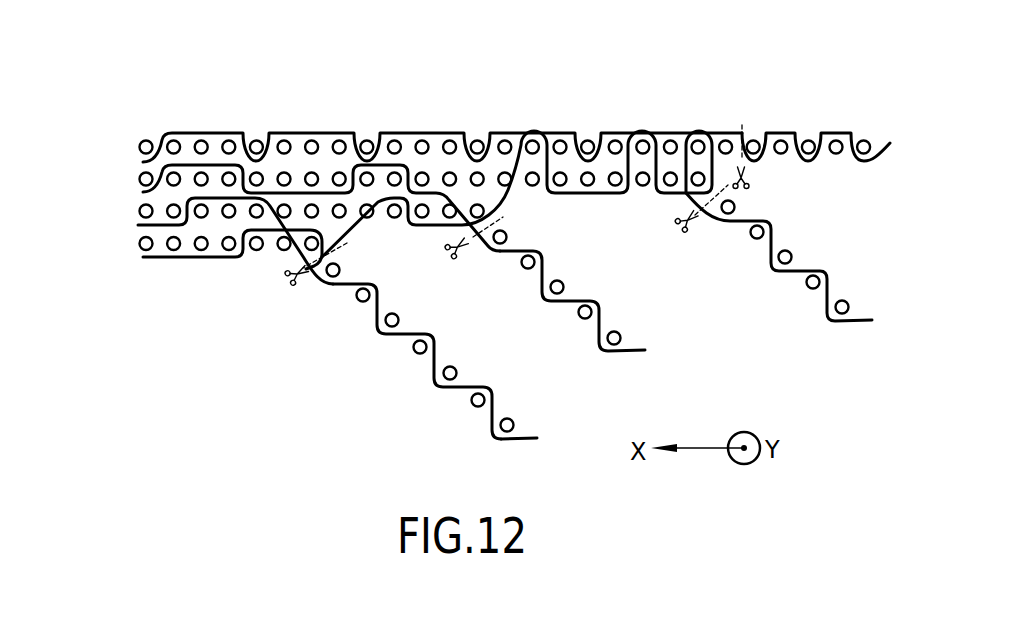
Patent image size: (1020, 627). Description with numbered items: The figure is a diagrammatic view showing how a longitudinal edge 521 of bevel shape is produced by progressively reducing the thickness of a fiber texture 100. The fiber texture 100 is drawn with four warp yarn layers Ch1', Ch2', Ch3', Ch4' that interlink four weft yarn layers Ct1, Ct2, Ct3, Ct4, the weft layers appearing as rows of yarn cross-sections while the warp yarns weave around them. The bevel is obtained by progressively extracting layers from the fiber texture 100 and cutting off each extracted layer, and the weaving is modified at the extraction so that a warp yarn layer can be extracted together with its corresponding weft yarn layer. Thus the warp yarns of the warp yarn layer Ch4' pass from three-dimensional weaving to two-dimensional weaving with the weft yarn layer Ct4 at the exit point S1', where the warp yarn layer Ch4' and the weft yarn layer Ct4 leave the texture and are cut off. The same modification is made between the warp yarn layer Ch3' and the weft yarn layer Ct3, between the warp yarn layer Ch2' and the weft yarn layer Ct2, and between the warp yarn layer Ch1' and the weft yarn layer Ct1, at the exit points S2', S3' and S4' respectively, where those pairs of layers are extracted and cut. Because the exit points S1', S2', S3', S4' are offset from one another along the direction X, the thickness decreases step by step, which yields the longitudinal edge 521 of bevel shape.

The fiber texture 100 is at (224, 99).
The longitudinal edge 521 is at (418, 375).
The weft yarn layer Ct1 is at (131, 148).
The weft yarn layer Ct2 is at (131, 178).
The weft yarn layer Ct3 is at (131, 210).
The weft yarn layer Ct4 is at (131, 242).
The exit point S1' is at (315, 292).
The exit point S2' is at (473, 264).
The exit point S3' is at (701, 234).
The exit point S4' is at (776, 164).
The warp yarn layer Ch1' is at (825, 159).
The warp yarn layer Ch2' is at (784, 277).
The warp yarn layer Ch3' is at (575, 313).
The warp yarn layer Ch4' is at (525, 458).